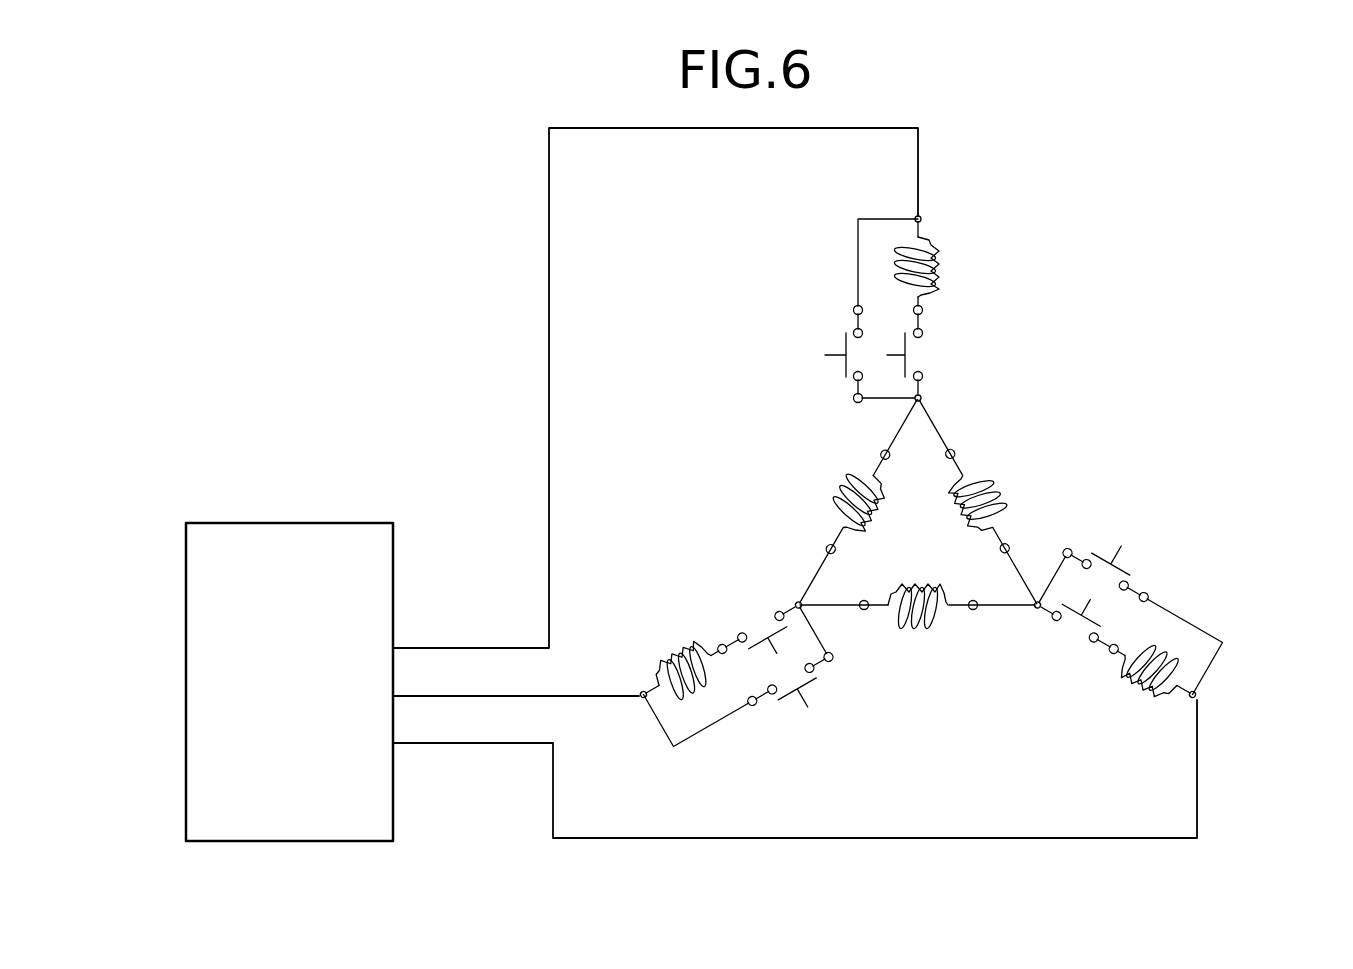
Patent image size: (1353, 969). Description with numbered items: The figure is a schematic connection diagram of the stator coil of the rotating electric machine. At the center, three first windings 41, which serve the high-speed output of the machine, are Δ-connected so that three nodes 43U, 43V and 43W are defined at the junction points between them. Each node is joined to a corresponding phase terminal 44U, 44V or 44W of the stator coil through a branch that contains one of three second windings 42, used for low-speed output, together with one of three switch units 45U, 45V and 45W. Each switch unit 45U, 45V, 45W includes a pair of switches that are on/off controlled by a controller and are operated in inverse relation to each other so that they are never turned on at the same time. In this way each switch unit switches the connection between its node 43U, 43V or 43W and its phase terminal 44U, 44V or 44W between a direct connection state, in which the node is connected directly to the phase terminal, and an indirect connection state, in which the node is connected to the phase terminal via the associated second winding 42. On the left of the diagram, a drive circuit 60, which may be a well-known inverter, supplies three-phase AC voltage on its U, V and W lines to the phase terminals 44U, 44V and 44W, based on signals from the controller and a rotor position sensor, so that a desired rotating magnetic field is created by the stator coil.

The drive circuit 60 is at (255, 523).
The first windings 41 is at (836, 500).
The second windings 42 is at (935, 263).
The node 43U is at (925, 393).
The node 43V is at (795, 603).
The node 43W is at (1037, 612).
The phase terminal 44U is at (922, 216).
The phase terminal 44V is at (640, 702).
The phase terminal 44W is at (1203, 698).
The switch unit 45U is at (845, 345).
The switch unit 45V is at (743, 612).
The switch unit 45W is at (1118, 563).